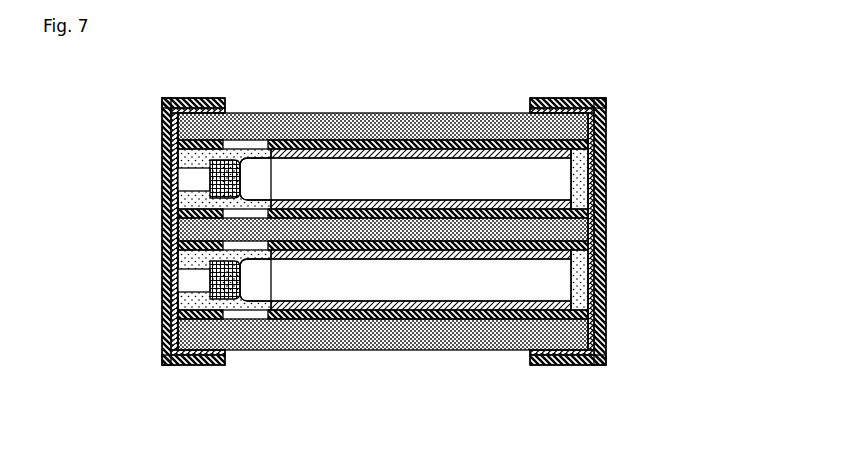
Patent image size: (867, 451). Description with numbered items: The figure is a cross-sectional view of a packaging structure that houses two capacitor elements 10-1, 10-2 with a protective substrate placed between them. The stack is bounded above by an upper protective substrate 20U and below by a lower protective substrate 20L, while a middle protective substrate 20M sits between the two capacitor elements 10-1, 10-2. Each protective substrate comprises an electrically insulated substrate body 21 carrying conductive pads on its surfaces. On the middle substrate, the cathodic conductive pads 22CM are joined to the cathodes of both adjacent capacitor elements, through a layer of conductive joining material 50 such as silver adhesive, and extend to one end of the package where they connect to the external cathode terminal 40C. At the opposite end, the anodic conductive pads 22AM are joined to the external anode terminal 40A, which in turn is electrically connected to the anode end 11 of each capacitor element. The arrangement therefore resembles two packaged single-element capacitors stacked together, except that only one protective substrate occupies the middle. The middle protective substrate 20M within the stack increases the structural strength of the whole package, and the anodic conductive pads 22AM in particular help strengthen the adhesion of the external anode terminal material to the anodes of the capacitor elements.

The external anode terminal 40A is at (132, 137).
The external cathode terminal 40C is at (618, 133).
The anodic conductive pads 22AM is at (157, 258).
The cathodic conductive pads 22CM is at (600, 258).
The upper protective substrate 20U is at (304, 100).
The middle protective substrate 20M is at (410, 228).
The lower protective substrate 20L is at (297, 350).
The capacitor element 10-2 is at (477, 165).
The capacitor element 10-1 is at (522, 268).
The electrically insulated substrate body 21 is at (372, 133).
The conductive joining material 50 is at (480, 245).
The anode end 11 is at (200, 262).